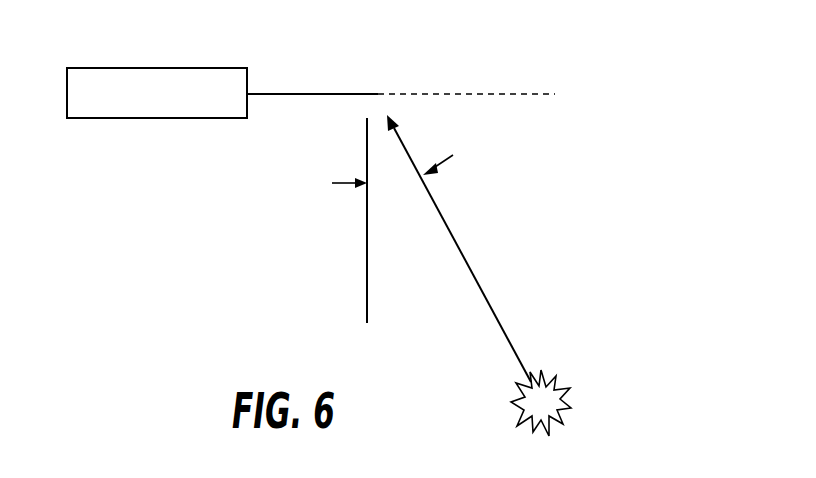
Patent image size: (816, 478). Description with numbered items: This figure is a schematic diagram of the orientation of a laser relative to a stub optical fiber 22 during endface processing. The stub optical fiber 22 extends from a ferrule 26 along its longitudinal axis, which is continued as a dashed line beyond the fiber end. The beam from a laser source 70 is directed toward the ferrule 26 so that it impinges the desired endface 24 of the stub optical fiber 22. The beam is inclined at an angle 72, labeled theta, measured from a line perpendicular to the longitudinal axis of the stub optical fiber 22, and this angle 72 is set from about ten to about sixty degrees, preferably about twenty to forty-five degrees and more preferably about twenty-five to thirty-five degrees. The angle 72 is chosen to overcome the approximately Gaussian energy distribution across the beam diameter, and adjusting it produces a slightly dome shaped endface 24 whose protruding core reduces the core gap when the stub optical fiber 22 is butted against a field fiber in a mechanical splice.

The ferrule 26 is at (173, 93).
The stub optical fiber 22 is at (290, 94).
The endface 24 is at (380, 92).
The laser source 70 is at (565, 398).
The angle θ 72 is at (397, 168).